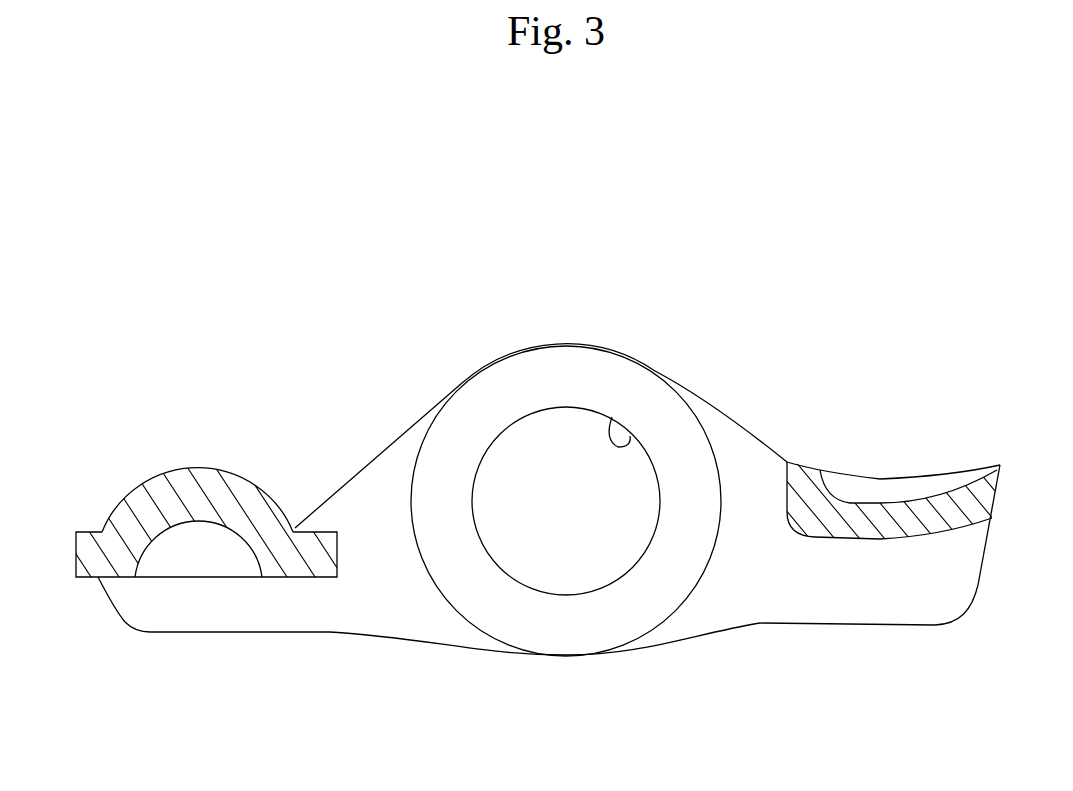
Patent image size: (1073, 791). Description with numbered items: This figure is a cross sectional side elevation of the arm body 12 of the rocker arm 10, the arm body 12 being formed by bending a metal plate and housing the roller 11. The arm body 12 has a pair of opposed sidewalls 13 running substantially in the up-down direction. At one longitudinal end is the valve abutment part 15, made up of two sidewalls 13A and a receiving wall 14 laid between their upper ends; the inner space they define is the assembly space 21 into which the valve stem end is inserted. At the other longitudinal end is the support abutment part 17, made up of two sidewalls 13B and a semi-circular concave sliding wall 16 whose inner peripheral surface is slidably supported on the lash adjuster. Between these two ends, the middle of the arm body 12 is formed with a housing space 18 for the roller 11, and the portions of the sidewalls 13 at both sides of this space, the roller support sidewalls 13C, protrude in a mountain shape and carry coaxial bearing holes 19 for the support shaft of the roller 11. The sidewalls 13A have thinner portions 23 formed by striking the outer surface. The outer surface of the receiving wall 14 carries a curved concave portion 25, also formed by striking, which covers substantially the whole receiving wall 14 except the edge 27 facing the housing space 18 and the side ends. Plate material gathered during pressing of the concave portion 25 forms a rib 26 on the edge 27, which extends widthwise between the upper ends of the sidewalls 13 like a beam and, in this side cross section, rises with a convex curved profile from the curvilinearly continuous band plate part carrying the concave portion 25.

The rocker arm 10 is at (628, 265).
The roller 11 is at (545, 347).
The arm body 12 is at (401, 452).
The sidewalls 13 is at (527, 653).
The sidewalls of the valve abutment part 13A is at (877, 607).
The sidewalls of the support abutment part 13B is at (182, 620).
The roller support sidewalls 13C is at (470, 630).
The receiving wall 14 is at (949, 485).
The valve abutment part 15 is at (997, 467).
The sliding wall 16 is at (197, 482).
The support abutment part 17 is at (75, 532).
The housing space 18 is at (681, 437).
The bearing holes 19 is at (612, 417).
The assembly space 21 is at (935, 565).
The thinner portions 23 is at (970, 598).
The concave portion 25 is at (883, 502).
The rib 26 is at (817, 486).
The edge of the receiving wall 27 is at (787, 507).